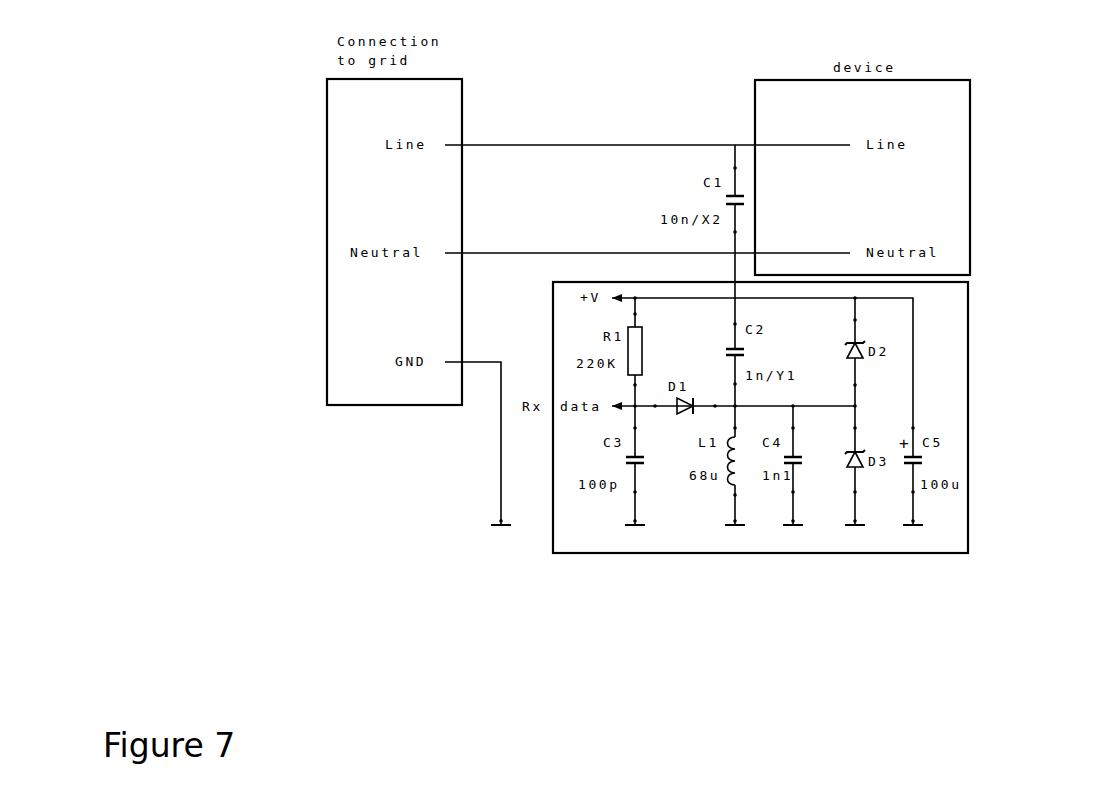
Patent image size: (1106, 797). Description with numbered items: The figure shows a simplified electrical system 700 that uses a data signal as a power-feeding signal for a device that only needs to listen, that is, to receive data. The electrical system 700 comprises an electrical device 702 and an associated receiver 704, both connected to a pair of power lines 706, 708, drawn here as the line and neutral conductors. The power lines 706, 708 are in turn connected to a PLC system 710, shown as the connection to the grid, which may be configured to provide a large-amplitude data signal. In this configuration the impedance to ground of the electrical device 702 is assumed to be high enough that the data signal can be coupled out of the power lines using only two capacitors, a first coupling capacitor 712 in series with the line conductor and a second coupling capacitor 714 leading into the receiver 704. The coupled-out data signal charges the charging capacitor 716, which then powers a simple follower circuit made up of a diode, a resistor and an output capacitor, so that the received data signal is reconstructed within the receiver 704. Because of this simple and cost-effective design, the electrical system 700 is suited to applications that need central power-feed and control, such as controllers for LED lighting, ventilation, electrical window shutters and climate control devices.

The electrical system 700 is at (686, 680).
The electrical device 702 is at (970, 187).
The receiver 704 is at (970, 478).
The power line 706 is at (545, 145).
The power line 708 is at (545, 253).
The PLC system 710 is at (327, 308).
The capacitor C1 712 is at (715, 165).
The capacitor C2 714 is at (715, 335).
The charging capacitor C5 716 is at (953, 443).